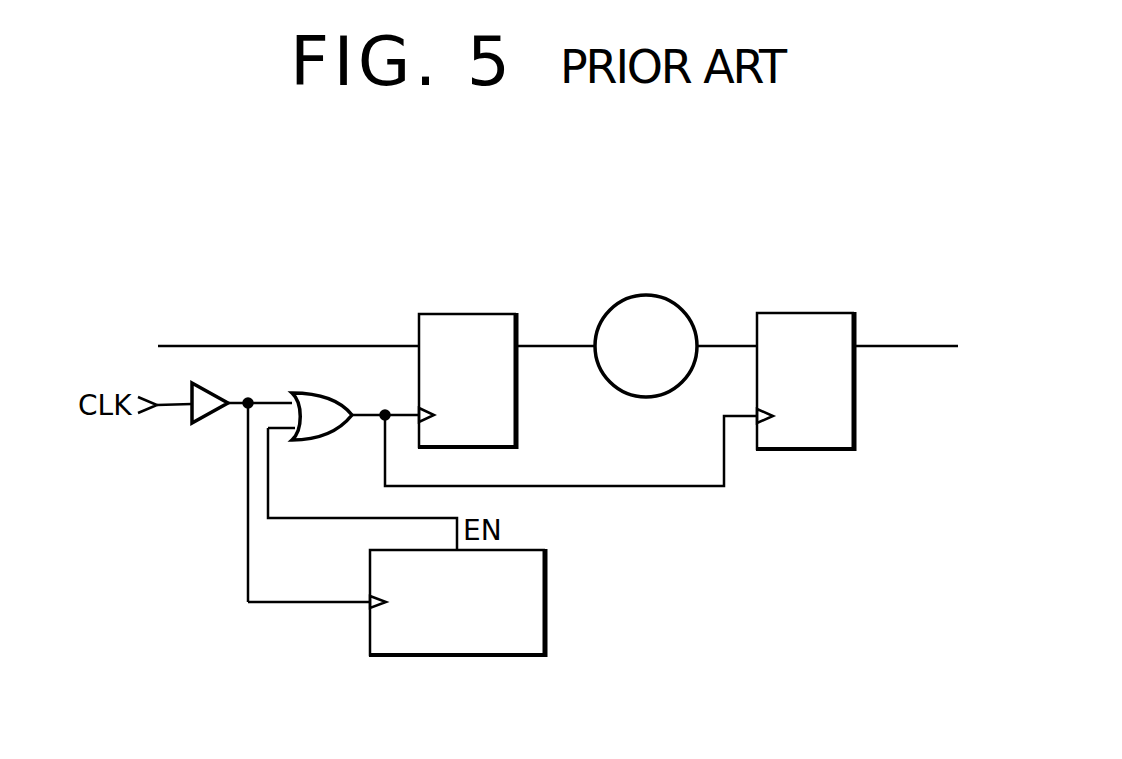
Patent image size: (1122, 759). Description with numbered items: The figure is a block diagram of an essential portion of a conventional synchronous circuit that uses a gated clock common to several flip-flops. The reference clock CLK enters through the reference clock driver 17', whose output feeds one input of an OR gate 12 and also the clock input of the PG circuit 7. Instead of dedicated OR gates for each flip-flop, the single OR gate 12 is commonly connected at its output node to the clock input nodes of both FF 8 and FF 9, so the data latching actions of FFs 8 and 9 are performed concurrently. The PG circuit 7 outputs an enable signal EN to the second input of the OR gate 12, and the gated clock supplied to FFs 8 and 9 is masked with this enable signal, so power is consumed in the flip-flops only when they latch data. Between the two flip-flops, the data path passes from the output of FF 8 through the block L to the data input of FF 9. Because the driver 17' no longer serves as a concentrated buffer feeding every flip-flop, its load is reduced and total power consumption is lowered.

The PG circuit 7 is at (545, 600).
The FF 8 is at (462, 314).
The FF 9 is at (801, 313).
The OR gate 12 is at (322, 440).
The reference clock driver 17' is at (194, 447).
The combinational logic circuit L is at (656, 296).